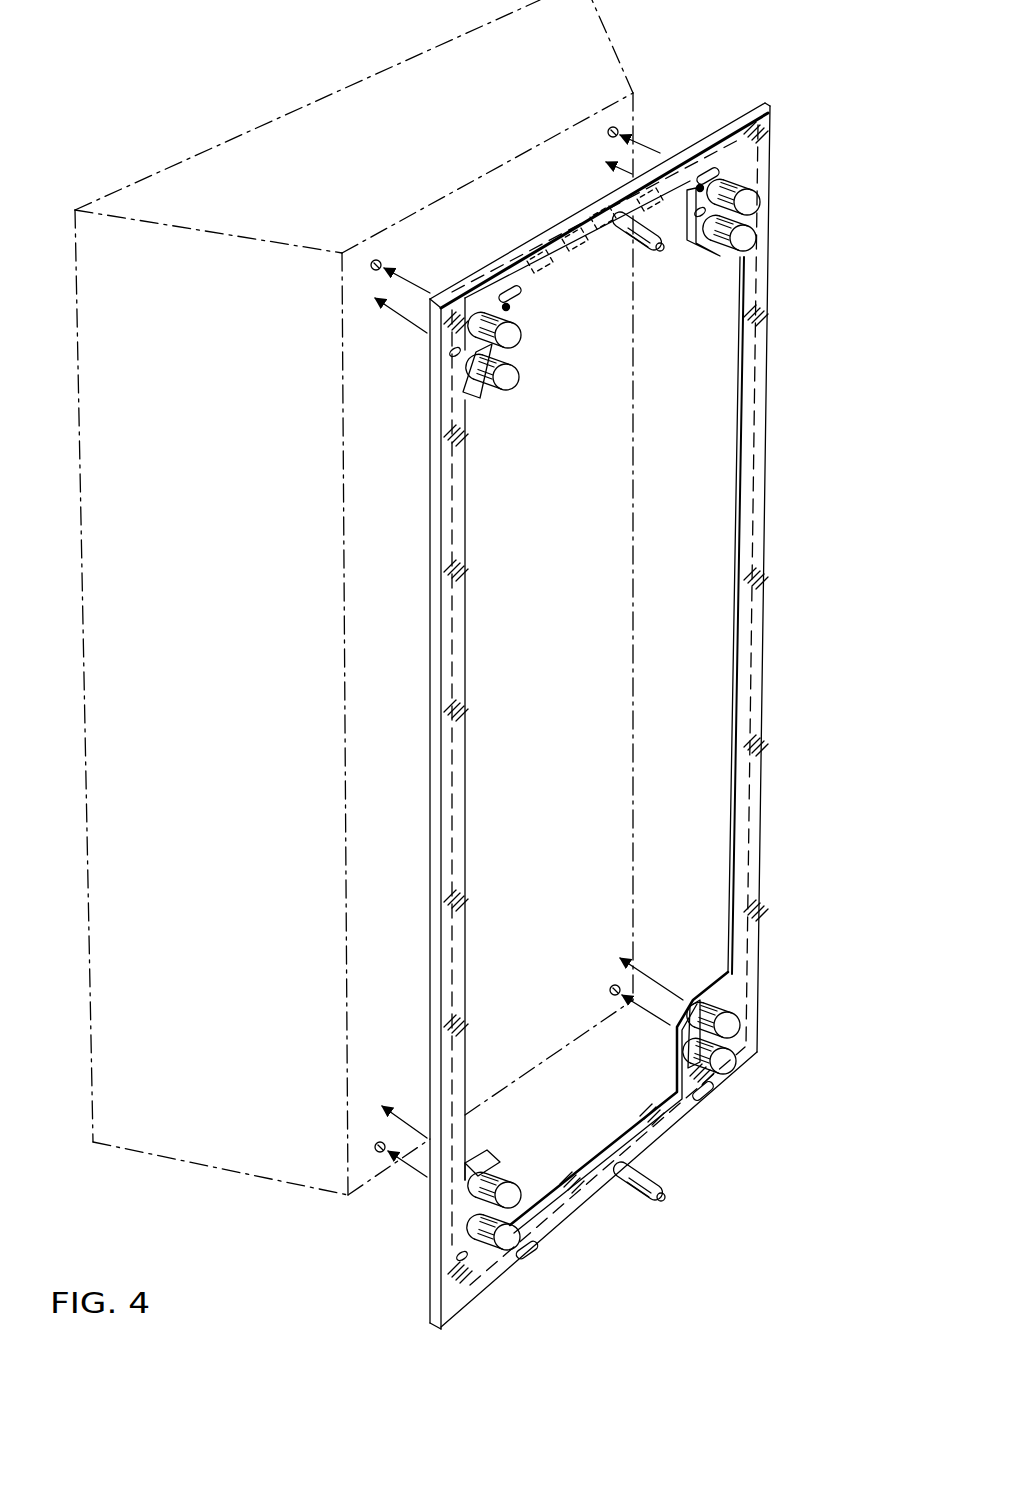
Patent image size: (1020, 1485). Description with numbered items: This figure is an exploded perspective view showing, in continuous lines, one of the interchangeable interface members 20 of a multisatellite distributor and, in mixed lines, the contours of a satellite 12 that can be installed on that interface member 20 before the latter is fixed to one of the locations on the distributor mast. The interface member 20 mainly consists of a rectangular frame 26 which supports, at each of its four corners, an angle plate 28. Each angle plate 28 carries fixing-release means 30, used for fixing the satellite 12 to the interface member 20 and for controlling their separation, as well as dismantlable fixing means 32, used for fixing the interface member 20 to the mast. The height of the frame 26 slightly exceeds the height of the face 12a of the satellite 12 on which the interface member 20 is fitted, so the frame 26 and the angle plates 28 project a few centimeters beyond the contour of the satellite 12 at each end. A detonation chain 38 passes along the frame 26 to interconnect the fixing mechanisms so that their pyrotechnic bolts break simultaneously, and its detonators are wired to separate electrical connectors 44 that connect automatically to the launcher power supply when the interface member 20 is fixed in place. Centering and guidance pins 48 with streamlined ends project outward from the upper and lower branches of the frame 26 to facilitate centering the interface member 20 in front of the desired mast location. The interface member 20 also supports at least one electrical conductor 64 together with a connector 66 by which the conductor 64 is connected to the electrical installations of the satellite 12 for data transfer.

The satellite 12 is at (322, 92).
The face of the satellite 12a is at (376, 527).
The interface member 20 is at (408, 862).
The rectangular frame 26 is at (440, 738).
The angle plate 28 is at (473, 393).
The fixing-release means 30 is at (520, 334).
The dismantlable fixing means 32 is at (722, 172).
The detonation chain 38 is at (758, 628).
The electrical connector 44 is at (660, 155).
The centering and guidance pin 48 is at (654, 248).
The electrical conductor 64 is at (574, 253).
The connector 66 is at (593, 210).